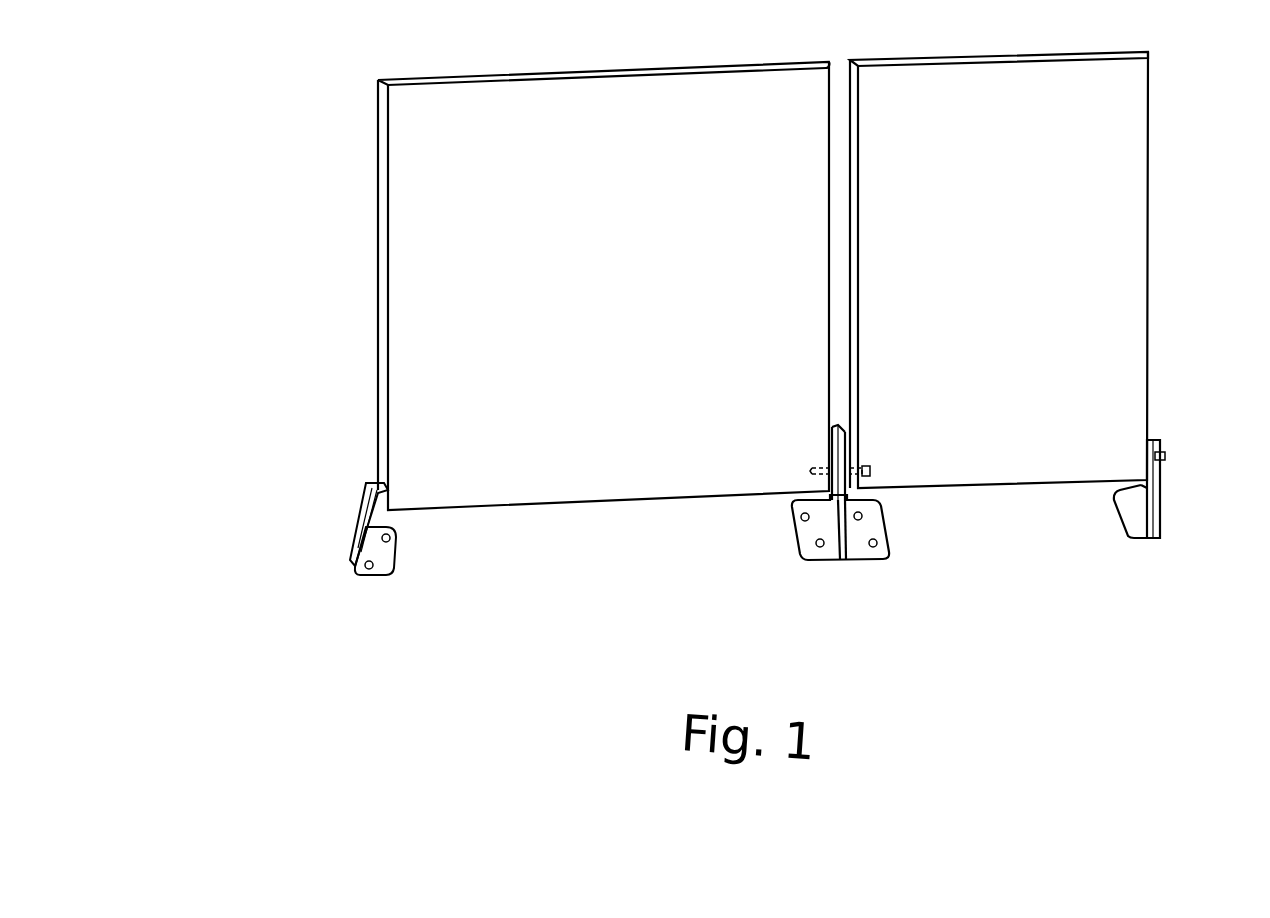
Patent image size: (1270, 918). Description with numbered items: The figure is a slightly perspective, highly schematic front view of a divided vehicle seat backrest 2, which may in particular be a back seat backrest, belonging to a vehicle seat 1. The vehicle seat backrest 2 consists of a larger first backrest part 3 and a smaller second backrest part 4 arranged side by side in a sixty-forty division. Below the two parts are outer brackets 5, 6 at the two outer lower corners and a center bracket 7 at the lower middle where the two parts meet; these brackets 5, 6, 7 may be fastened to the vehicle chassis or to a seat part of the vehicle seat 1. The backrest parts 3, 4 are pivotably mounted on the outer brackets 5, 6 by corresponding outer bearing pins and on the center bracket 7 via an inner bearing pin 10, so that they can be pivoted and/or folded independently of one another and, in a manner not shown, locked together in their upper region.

The vehicle seat 1 is at (283, 572).
The vehicle seat backrest 2 is at (241, 235).
The first backrest part 3 is at (403, 282).
The second backrest part 4 is at (1150, 277).
The outer bracket 5 is at (396, 557).
The outer bracket 6 is at (1112, 519).
The center bracket 7 is at (887, 525).
The inner bearing pin 10 is at (863, 463).